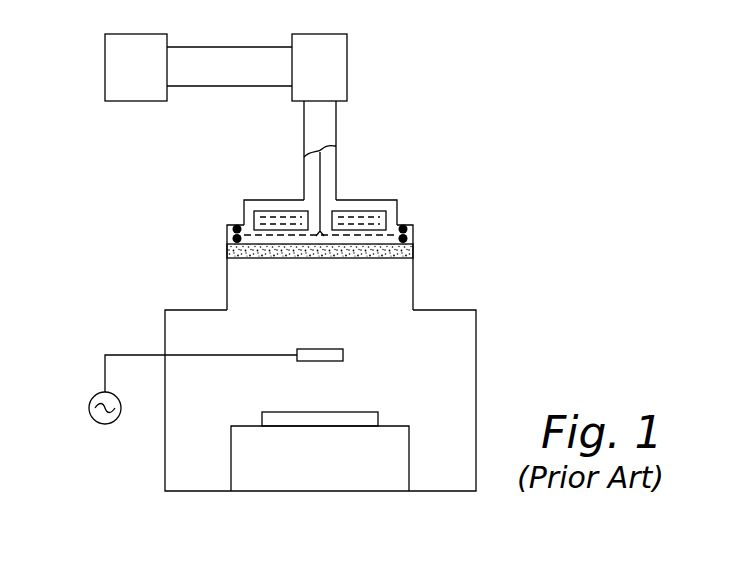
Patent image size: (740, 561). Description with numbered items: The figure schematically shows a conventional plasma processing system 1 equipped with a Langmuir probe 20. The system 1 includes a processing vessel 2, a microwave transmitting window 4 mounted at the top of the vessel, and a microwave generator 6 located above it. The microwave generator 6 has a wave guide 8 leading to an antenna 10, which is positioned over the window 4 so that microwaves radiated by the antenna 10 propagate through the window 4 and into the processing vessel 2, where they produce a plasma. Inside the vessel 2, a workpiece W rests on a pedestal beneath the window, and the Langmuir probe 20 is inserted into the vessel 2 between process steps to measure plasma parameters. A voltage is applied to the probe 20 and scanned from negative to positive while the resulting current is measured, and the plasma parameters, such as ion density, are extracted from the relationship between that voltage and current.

The plasma processing system 1 is at (530, 152).
The processing vessel 2 is at (476, 357).
The microwave transmitting window 4 is at (296, 258).
The microwave generator 6 is at (105, 70).
The wave guide 8 is at (196, 47).
The antenna 10 is at (397, 222).
The Langmuir probe 20 is at (322, 349).
The wafer W is at (322, 412).